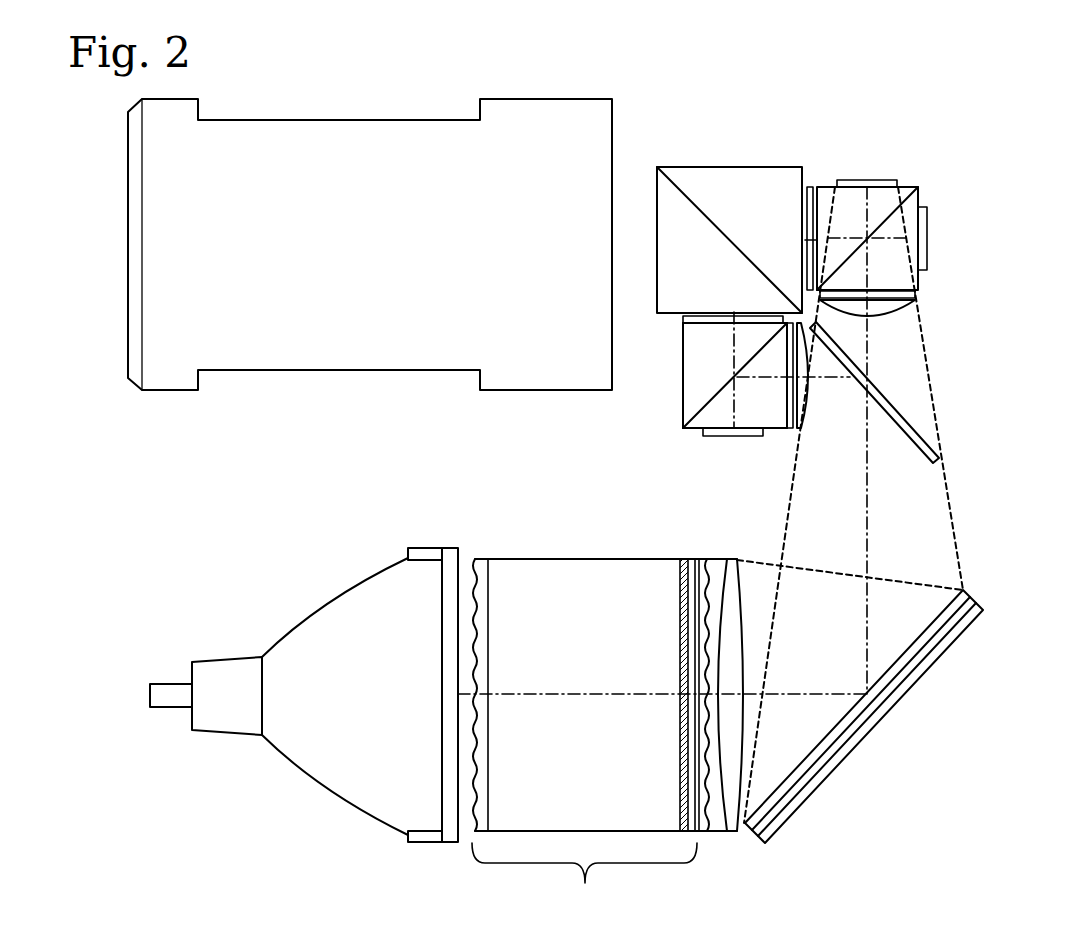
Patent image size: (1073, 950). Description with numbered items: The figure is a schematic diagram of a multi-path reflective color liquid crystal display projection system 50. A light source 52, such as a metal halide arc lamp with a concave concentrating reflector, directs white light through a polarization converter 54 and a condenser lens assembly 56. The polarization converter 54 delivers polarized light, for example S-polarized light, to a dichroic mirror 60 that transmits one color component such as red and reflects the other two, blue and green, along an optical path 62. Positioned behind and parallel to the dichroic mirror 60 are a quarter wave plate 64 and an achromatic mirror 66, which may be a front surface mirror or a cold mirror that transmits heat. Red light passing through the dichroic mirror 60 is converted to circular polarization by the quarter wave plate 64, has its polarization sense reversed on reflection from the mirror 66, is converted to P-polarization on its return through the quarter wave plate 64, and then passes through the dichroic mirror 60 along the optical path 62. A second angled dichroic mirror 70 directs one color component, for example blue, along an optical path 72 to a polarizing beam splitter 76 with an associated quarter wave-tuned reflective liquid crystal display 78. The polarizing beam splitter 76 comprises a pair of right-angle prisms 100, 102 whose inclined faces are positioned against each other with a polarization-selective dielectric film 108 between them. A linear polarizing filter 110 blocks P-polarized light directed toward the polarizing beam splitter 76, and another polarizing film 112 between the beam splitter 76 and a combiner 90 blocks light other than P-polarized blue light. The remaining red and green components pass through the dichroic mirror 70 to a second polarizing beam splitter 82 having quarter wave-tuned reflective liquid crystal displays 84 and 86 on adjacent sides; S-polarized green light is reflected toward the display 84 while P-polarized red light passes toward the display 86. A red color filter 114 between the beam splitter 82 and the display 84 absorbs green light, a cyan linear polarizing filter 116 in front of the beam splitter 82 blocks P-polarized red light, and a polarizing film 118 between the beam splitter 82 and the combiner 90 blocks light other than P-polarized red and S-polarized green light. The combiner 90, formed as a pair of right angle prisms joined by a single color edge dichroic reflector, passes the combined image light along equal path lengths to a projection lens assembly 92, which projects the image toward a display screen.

The multi-path reflective color liquid crystal display projection system 50 is at (357, 474).
The light source 52 is at (302, 798).
The polarization converter 54 is at (604, 735).
The condenser lens assembly 56 is at (733, 622).
The dichroic mirror 60 is at (836, 735).
The optical path 62 is at (872, 510).
The quarter wave plate 64 is at (945, 628).
The achromatic mirror 66 is at (864, 716).
The second angled dichroic mirror 70 is at (898, 420).
The optical path 72 is at (806, 380).
The polarizing beam splitter 76 is at (688, 400).
The quarter wave-tuned reflective liquid crystal display 78 is at (723, 437).
The second polarizing beam splitter 82 is at (921, 284).
The reflective liquid crystal display 84 is at (928, 238).
The reflective liquid crystal display 86 is at (911, 208).
The combiner 90 is at (735, 172).
The projection lens assembly 92 is at (444, 256).
The right-angle prism 100 is at (733, 395).
The right-angle prism 102 is at (762, 416).
The dielectric film 108 is at (722, 392).
The linear polarizing filter 110 is at (787, 357).
The polarizing film 112 is at (718, 317).
The red color filter 114 is at (922, 196).
The cyan linear polarizing filter 116 is at (880, 305).
The polarizing film 118 is at (818, 196).